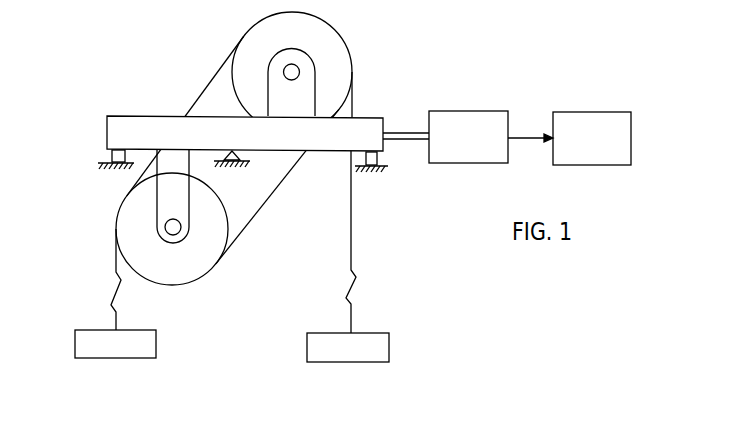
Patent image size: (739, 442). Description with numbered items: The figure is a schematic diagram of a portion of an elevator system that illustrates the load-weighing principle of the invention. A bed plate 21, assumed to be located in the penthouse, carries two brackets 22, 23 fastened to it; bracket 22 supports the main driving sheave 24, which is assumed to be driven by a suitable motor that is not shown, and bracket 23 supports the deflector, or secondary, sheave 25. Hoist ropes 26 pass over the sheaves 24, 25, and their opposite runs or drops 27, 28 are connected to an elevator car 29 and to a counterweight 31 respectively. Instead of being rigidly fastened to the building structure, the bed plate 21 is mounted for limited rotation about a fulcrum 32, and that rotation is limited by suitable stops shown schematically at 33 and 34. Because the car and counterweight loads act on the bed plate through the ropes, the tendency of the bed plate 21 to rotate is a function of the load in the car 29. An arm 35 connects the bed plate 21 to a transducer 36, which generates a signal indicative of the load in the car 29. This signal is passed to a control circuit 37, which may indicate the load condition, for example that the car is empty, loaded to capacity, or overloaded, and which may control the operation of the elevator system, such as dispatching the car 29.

The bed plate 21 is at (157, 116).
The bracket 22 is at (270, 63).
The bracket 23 is at (189, 212).
The main driving sheave 24 is at (345, 45).
The deflector sheave 25 is at (197, 278).
The hoist ropes 26 is at (252, 220).
The run 27 is at (352, 250).
The run 28 is at (116, 265).
The elevator car 29 is at (390, 348).
The counterweight 31 is at (157, 343).
The fulcrum 32 is at (243, 160).
The stop 33 is at (112, 157).
The stop 34 is at (378, 160).
The arm 35 is at (412, 130).
The transducer 36 is at (480, 111).
The control circuit 37 is at (595, 110).